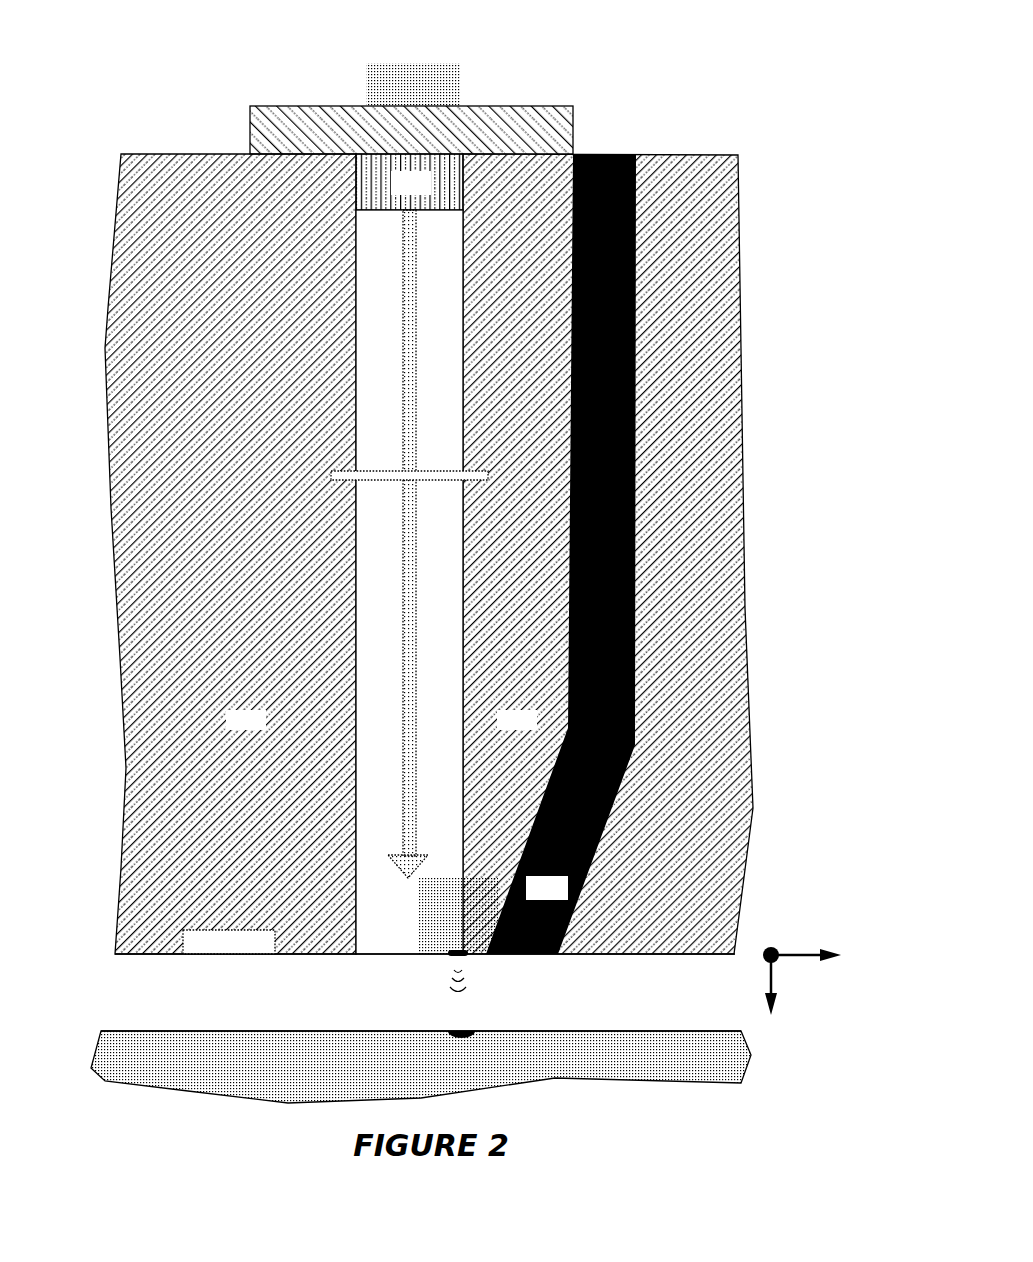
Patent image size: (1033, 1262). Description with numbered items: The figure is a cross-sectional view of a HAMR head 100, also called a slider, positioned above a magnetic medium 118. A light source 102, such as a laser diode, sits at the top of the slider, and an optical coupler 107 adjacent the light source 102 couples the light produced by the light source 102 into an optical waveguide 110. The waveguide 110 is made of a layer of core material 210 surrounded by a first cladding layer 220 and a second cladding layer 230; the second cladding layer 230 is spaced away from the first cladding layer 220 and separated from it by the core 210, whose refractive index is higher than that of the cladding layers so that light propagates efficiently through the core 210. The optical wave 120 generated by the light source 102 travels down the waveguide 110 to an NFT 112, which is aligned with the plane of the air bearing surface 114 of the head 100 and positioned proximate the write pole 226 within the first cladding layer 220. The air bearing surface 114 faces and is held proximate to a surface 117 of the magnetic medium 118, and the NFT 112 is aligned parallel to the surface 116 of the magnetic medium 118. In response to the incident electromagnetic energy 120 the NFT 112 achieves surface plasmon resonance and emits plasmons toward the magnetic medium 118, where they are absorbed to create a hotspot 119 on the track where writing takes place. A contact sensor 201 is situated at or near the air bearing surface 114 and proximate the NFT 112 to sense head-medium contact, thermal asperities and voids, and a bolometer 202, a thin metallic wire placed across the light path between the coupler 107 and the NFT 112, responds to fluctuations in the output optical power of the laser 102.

The HAMR head 100 is at (444, 582).
The light source 102 is at (262, 98).
The optical coupler 107 is at (409, 182).
The optical waveguide 110 is at (400, 587).
The NFT 112 is at (430, 942).
The air bearing surface 114 is at (157, 946).
The surface of the magnetic medium 116 is at (408, 55).
The surface of the magnetic medium 117 is at (677, 1022).
The magnetic medium 118 is at (425, 1063).
The hotspot 119 is at (455, 1030).
The optical wave 120 is at (395, 663).
The contact sensor 201 is at (215, 921).
The bolometer 202 is at (331, 465).
The core layer 210 is at (446, 677).
The first cladding layer 220 is at (608, 554).
The write pole 226 is at (561, 554).
The second cladding layer 230 is at (230, 554).